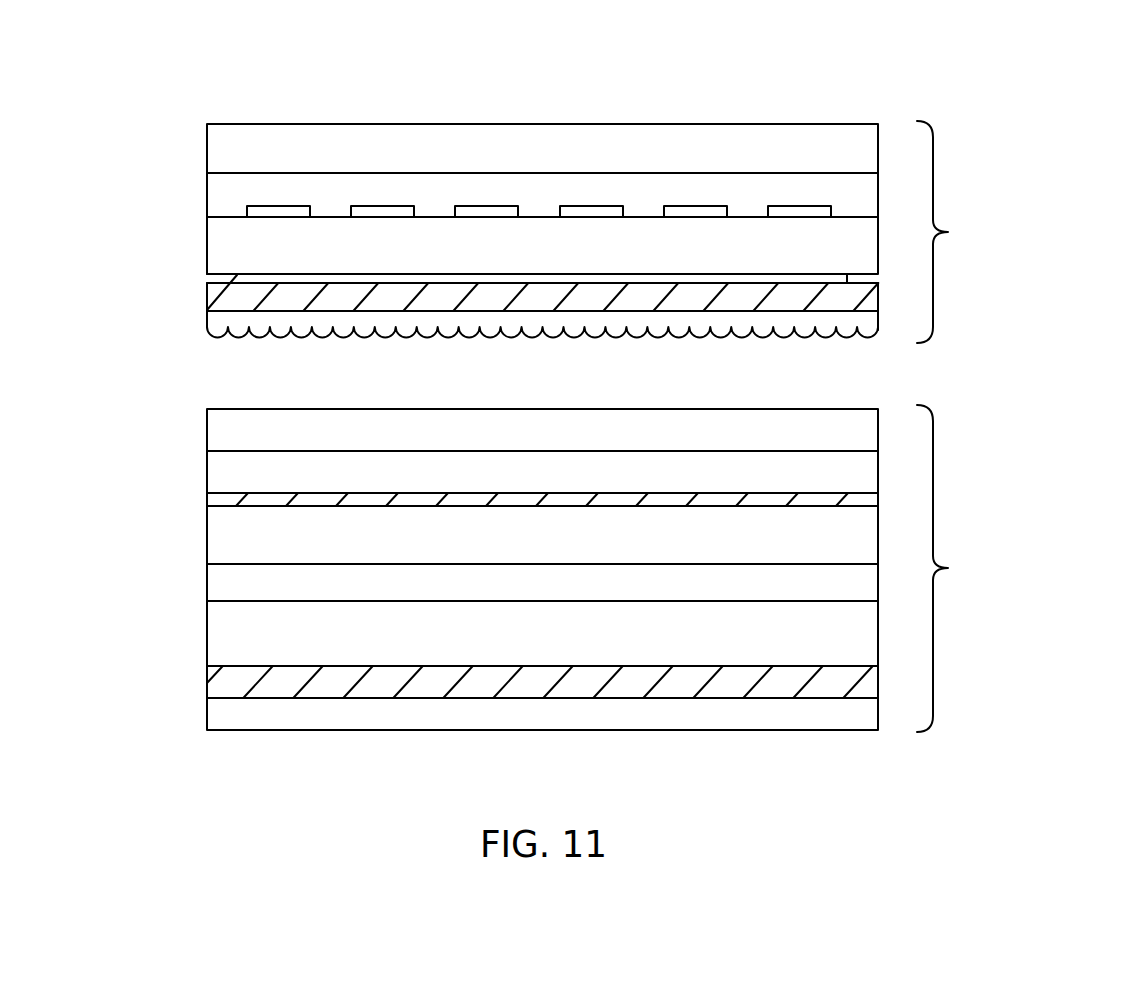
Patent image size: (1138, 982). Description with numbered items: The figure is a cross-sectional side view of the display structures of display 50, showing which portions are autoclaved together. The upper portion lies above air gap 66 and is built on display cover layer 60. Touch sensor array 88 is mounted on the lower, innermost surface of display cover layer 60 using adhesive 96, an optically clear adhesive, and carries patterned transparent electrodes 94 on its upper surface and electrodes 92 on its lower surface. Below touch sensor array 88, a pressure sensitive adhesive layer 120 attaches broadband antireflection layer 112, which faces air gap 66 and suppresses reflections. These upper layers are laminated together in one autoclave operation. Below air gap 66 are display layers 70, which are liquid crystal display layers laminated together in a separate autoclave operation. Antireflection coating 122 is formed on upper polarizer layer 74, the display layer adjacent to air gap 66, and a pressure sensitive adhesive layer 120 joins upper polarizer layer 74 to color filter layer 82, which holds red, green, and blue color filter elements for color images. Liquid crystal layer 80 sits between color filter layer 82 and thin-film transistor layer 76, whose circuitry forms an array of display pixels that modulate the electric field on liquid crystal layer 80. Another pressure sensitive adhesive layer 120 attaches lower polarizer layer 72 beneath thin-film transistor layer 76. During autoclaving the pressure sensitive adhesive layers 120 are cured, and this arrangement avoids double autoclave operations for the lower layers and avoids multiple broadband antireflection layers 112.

The display 50 is at (754, 84).
The display cover layer 60 is at (207, 147).
The adhesive 96 is at (207, 195).
The electrodes 94 is at (378, 205).
The touch sensor array 88 is at (207, 243).
The electrodes 92 is at (240, 278).
The pressure sensitive adhesive layer 120 is at (207, 296).
The broadband antireflection layer 112 is at (207, 324).
The air gap 66 is at (868, 373).
The antireflection coating 122 is at (207, 430).
The upper polarizer layer 74 is at (207, 470).
The color filter layer 82 is at (207, 532).
The liquid crystal layer 80 is at (207, 580).
The thin-film transistor layer 76 is at (207, 628).
The polarizer layer 72 is at (207, 712).
The display layers 70 is at (891, 651).